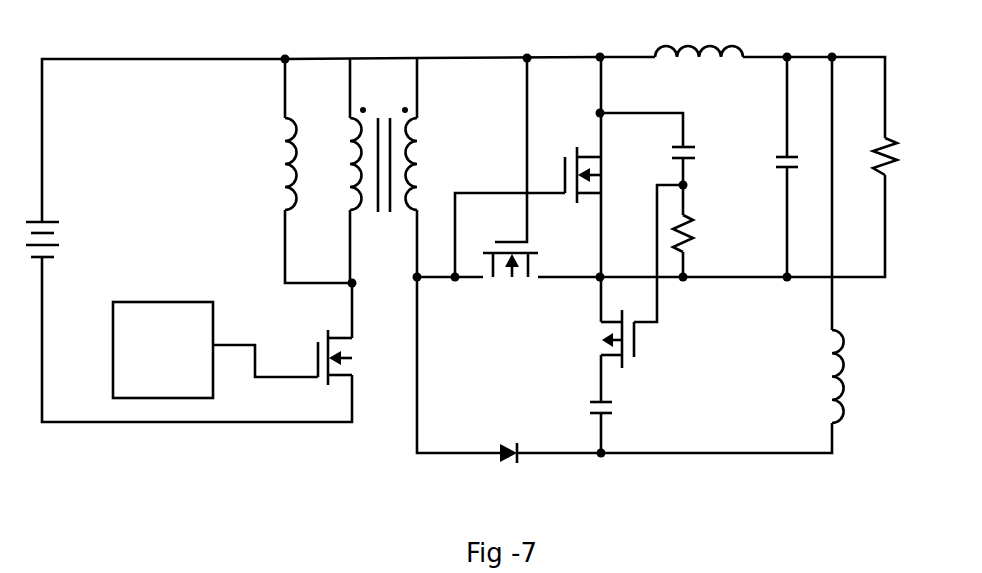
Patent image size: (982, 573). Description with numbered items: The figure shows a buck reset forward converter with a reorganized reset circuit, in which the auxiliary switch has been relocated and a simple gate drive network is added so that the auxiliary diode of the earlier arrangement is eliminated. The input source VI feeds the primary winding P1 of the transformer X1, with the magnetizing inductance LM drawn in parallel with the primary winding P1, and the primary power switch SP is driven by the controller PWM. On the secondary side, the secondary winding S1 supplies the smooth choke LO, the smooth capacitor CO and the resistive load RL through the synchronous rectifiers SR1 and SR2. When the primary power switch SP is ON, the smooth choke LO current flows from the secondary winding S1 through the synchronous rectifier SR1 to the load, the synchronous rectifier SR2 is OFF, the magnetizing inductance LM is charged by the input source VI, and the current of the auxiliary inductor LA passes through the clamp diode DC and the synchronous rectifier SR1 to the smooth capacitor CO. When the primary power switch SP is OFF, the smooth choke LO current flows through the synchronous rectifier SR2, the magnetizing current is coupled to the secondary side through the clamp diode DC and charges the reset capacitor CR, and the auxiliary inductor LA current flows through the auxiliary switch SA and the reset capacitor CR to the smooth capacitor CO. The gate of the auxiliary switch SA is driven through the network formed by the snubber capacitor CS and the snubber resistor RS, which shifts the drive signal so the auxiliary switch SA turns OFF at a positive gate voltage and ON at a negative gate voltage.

The input source VI is at (58, 240).
The magnetizing inductance LM is at (273, 164).
The primary winding P1 is at (339, 164).
The transformer X1 is at (384, 145).
The secondary winding S1 is at (430, 164).
The controller PWM is at (163, 350).
The primary power switch SP is at (355, 357).
The synchronous rectifier SR1 is at (510, 286).
The synchronous rectifier SR2 is at (573, 161).
The snubber capacitor CS is at (699, 150).
The snubber resistor RS is at (701, 233).
The smooth choke LO is at (699, 35).
The smooth capacitor CO is at (770, 163).
The resistive load RL is at (868, 157).
The auxiliary switch SA is at (594, 339).
The reset capacitor CR is at (583, 407).
The clamp diode DC is at (511, 470).
The auxiliary inductor LA is at (853, 376).